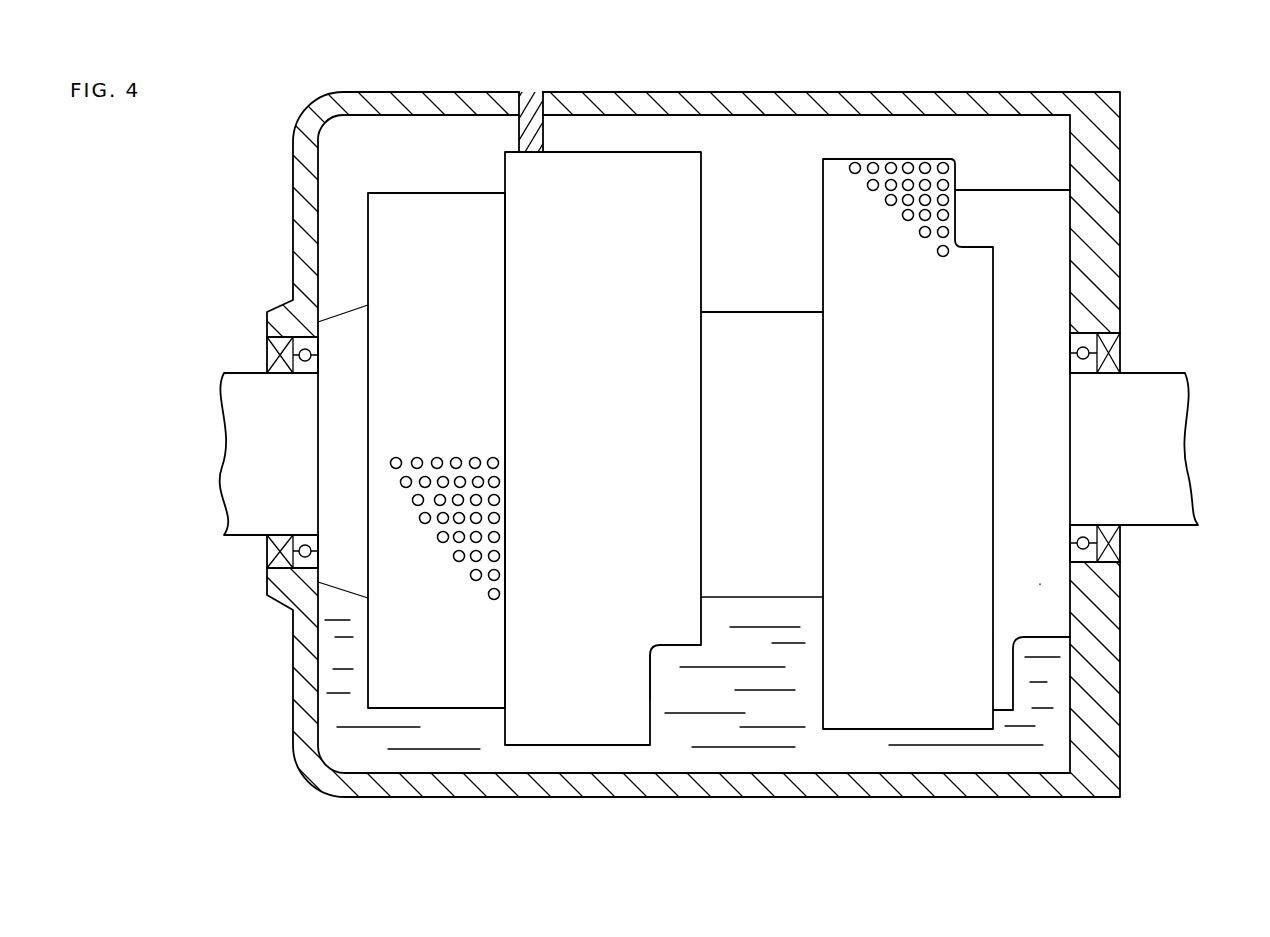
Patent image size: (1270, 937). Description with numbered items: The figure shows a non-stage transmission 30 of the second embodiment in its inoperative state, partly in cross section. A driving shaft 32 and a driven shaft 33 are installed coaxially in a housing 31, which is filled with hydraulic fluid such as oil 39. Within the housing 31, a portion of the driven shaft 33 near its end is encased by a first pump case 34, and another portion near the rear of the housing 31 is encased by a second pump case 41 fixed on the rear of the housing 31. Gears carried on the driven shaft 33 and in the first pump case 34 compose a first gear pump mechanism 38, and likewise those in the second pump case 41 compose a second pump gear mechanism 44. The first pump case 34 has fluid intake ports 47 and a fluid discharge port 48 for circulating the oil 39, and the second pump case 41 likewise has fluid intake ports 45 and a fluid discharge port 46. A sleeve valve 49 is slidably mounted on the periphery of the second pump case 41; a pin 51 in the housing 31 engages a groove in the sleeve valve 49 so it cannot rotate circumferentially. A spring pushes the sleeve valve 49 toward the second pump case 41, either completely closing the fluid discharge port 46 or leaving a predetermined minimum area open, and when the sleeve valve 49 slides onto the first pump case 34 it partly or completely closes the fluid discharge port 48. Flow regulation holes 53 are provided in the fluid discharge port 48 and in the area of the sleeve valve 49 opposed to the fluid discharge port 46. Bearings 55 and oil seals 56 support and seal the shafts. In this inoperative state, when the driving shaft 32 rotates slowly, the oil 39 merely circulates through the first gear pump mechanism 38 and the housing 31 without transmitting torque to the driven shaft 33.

The non-stage transmission 30 is at (1152, 118).
The housing 31 is at (685, 102).
The driving shaft 32 is at (255, 465).
The driven shaft 33 is at (1152, 415).
The first pump case 34 is at (418, 252).
The first gear pump mechanism 38 is at (402, 208).
The oil 39 is at (760, 737).
The second pump case 41 is at (1040, 584).
The second pump gear mechanism 44 is at (1036, 218).
The fluid intake ports 45 is at (1033, 667).
The fluid discharge port 46 is at (918, 175).
The fluid intake ports 47 is at (653, 672).
The fluid discharge port 48 is at (465, 565).
The sleeve valve 49 is at (563, 710).
The pin 51 is at (543, 137).
The flow regulation holes 53 is at (891, 165).
The bearings 55 is at (305, 572).
The oil seals 56 is at (272, 355).